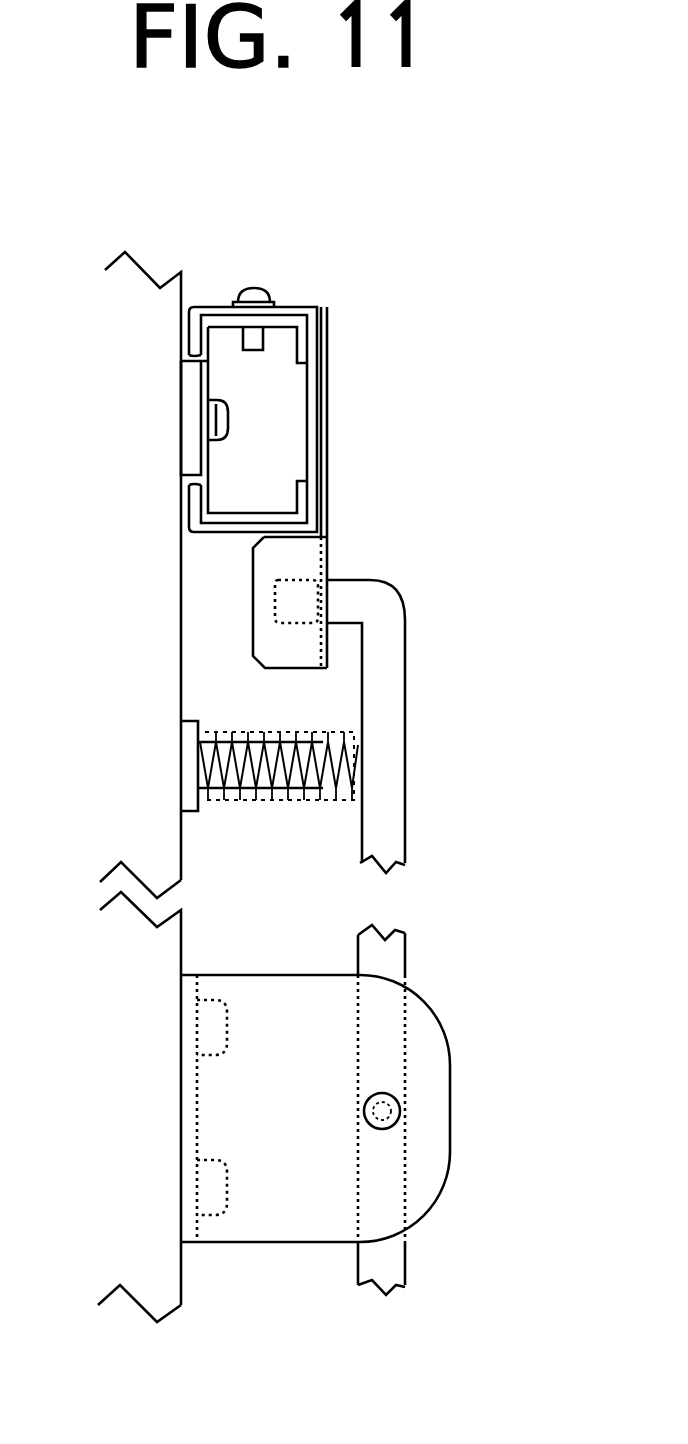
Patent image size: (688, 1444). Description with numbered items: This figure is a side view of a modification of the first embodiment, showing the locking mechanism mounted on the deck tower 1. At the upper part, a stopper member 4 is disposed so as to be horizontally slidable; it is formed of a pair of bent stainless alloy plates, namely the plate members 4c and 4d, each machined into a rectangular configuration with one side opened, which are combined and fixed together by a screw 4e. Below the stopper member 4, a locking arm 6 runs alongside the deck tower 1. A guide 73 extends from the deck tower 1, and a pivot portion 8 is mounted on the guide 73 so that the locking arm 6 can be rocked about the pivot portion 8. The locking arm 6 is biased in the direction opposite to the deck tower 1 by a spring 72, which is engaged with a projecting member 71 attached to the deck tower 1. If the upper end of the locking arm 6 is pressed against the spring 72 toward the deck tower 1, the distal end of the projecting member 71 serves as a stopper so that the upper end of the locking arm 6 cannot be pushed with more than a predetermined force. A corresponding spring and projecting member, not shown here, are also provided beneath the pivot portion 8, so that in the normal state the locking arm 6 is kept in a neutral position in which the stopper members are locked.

The deck tower 1 is at (181, 584).
The stopper member 4 is at (327, 387).
The plate member 4c is at (300, 309).
The plate member 4d is at (205, 361).
The screw 4e is at (252, 290).
The locking arm 6 is at (387, 797).
The projecting member 71 is at (186, 748).
The spring 72 is at (254, 728).
The guide 73 is at (225, 1118).
The pivot portion 8 is at (395, 1117).